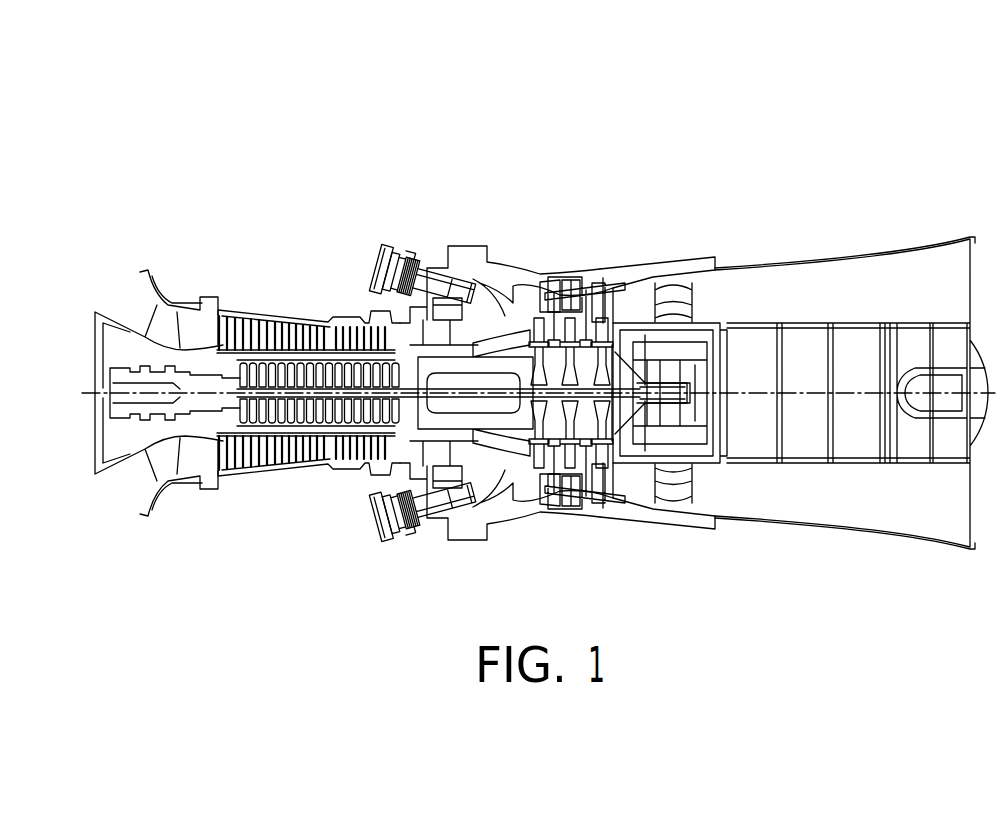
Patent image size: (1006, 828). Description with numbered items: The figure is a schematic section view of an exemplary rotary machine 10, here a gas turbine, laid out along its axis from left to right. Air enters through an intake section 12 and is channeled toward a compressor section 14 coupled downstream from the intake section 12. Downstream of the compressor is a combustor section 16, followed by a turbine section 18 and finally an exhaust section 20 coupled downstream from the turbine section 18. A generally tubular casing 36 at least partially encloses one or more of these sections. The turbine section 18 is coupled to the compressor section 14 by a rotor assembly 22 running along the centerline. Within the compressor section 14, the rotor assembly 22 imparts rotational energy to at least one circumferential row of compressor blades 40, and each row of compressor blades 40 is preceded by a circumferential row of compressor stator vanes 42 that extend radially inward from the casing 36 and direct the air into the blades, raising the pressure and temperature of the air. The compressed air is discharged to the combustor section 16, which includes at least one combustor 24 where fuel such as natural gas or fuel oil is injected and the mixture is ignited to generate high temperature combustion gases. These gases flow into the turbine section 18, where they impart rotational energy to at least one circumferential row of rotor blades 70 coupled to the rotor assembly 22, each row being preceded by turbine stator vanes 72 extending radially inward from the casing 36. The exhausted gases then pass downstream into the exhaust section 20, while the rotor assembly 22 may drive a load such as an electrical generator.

The rotary machine 10 is at (717, 134).
The intake section 12 is at (108, 290).
The compressor section 14 is at (298, 308).
The combustor section 16 is at (396, 232).
The turbine section 18 is at (597, 213).
The exhaust section 20 is at (835, 231).
The rotor assembly 22 is at (667, 375).
The combustor 24 is at (440, 530).
The casing 36 is at (623, 268).
The compressor blades 40 is at (264, 462).
The compressor stator vanes 42 is at (253, 473).
The rotor blades 70 is at (576, 300).
The turbine stator vanes 72 is at (549, 298).